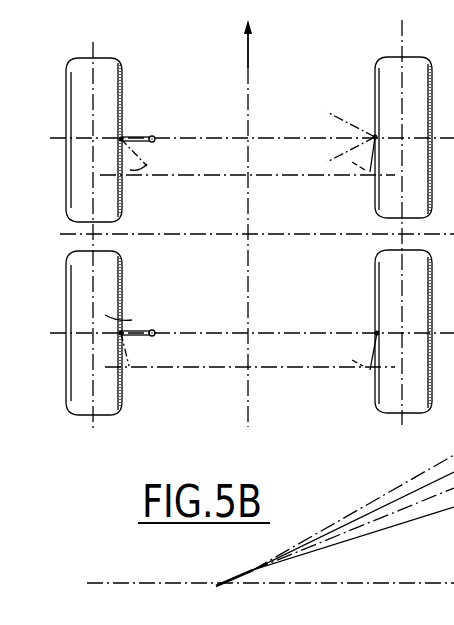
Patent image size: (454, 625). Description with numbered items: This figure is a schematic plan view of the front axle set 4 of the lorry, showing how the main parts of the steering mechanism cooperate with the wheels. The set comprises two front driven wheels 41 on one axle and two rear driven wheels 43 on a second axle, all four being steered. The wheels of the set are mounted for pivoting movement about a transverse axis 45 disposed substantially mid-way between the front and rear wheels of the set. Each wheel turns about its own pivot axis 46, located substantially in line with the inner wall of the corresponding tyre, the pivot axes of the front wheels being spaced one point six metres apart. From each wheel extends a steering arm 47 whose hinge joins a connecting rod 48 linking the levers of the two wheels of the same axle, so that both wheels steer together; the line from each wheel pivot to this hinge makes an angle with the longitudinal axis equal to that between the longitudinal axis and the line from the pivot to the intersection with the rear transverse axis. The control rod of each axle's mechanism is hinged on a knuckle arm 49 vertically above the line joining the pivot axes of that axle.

The front axle set 4 is at (291, 223).
The front driven wheels 41 is at (118, 108).
The rear driven wheels 43 is at (112, 298).
The pivot axis 45 is at (362, 232).
The pivot axes 46 is at (123, 137).
The steering arm 47 is at (141, 171).
The connecting rod 48 is at (320, 176).
The knuckle arm 49 is at (148, 143).